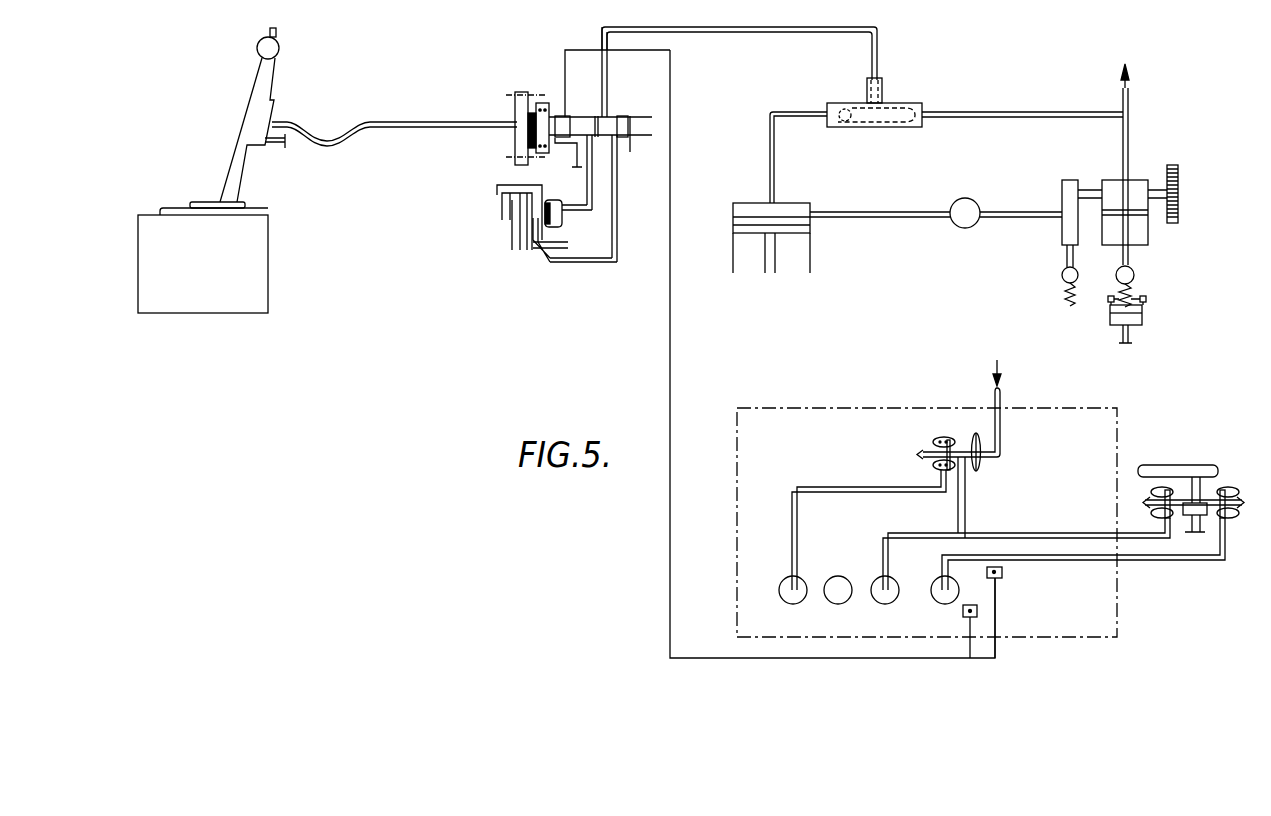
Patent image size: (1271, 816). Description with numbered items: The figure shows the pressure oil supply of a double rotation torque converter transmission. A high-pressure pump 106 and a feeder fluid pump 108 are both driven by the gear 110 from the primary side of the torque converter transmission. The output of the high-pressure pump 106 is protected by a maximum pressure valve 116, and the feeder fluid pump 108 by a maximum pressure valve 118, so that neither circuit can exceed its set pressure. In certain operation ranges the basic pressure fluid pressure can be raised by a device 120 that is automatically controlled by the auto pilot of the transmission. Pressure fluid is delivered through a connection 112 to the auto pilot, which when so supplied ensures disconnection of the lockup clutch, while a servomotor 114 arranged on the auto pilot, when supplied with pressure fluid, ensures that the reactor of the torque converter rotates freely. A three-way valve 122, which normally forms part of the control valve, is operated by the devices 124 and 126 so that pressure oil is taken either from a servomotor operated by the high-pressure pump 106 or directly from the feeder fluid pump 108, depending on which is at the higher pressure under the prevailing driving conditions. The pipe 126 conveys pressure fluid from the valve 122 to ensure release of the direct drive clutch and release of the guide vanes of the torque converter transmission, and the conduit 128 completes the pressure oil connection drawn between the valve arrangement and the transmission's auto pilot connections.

The high-pressure pump 106 is at (1072, 222).
The feeder fluid pump 108 is at (1140, 228).
The gear 110 is at (1180, 208).
The connection to auto pilot 112 is at (1002, 572).
The servomotor 114 is at (963, 612).
The maximum pressure valve of the high-pressure pump 116 is at (1062, 275).
The maximum pressure valve of the feeder fluid pump 118 is at (1137, 277).
The pressure increasing device 120 is at (1142, 312).
The three-way valve 122 is at (897, 113).
The valve operating device 124 is at (530, 90).
The valve operating device 126 is at (258, 92).
The conduit 128 is at (670, 378).